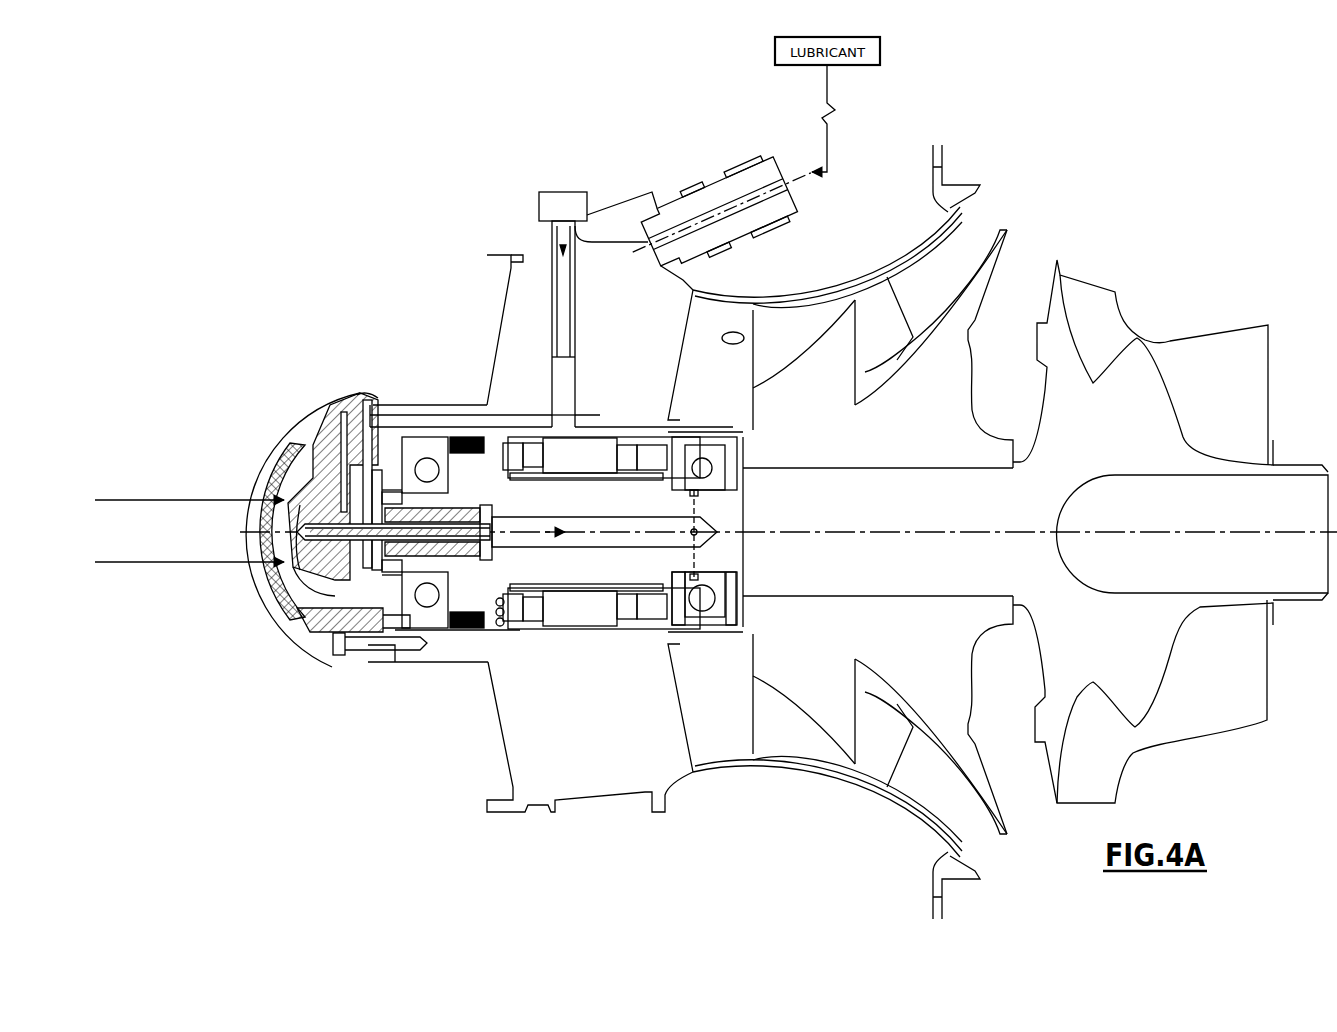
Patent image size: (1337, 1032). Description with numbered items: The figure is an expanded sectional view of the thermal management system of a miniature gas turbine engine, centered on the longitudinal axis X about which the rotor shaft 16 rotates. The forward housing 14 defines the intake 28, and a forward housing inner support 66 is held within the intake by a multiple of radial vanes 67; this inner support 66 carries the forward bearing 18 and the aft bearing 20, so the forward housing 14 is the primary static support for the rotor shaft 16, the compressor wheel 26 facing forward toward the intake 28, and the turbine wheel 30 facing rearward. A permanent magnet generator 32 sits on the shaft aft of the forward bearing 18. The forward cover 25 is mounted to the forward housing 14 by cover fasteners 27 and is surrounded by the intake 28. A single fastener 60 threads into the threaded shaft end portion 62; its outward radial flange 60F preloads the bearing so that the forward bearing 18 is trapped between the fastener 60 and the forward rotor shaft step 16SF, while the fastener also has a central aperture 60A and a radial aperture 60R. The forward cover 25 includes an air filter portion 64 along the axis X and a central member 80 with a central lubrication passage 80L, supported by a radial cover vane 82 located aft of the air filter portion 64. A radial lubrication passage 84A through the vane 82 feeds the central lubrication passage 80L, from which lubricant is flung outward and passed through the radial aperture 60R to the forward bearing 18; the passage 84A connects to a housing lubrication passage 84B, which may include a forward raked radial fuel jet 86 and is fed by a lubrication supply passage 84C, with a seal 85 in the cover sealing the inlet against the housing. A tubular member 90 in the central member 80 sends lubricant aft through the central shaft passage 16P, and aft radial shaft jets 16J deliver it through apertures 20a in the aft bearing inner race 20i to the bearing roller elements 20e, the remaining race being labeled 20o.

The forward housing 14 is at (460, 675).
The rotor shaft 16 is at (884, 521).
The aft radial shaft jets 16J is at (720, 568).
The central shaft passage 16P is at (565, 600).
The forward rotor shaft step 16SF is at (535, 465).
The forward bearing 18 is at (430, 440).
The aft bearing 20 is at (695, 630).
The apertures 20a is at (720, 580).
The aft bearing inner race 20i is at (715, 598).
The bearing roller elements 20e is at (740, 620).
The bearing outer race 20o is at (735, 625).
The forward cover 25 is at (290, 440).
The compressor wheel 26 is at (927, 439).
The cover fasteners 27 is at (340, 655).
The intake 28 is at (495, 335).
The turbine wheel 30 is at (1239, 420).
The permanent magnet generator 32 is at (570, 660).
The fastener 60 is at (340, 640).
The central aperture 60A is at (490, 540).
The outward radial flange 60F is at (297, 505).
The radial aperture 60R is at (392, 495).
The threaded shaft end portion 62 is at (445, 515).
The air filter portion 64 is at (278, 456).
The forward housing inner support 66 is at (440, 660).
The radial vanes 67 is at (520, 738).
The central member 80 is at (285, 565).
The central lubrication passage 80L is at (295, 598).
The radial cover vane 82 is at (300, 620).
The radial lubrication passage 84A is at (345, 415).
The housing lubrication passage 84B is at (560, 350).
The lubrication supply passage 84C is at (570, 372).
The seal 85 is at (344, 410).
The forward raked radial fuel jet 86 is at (412, 445).
The tubular member 90 is at (505, 600).
The longitudinal axis X is at (1262, 556).